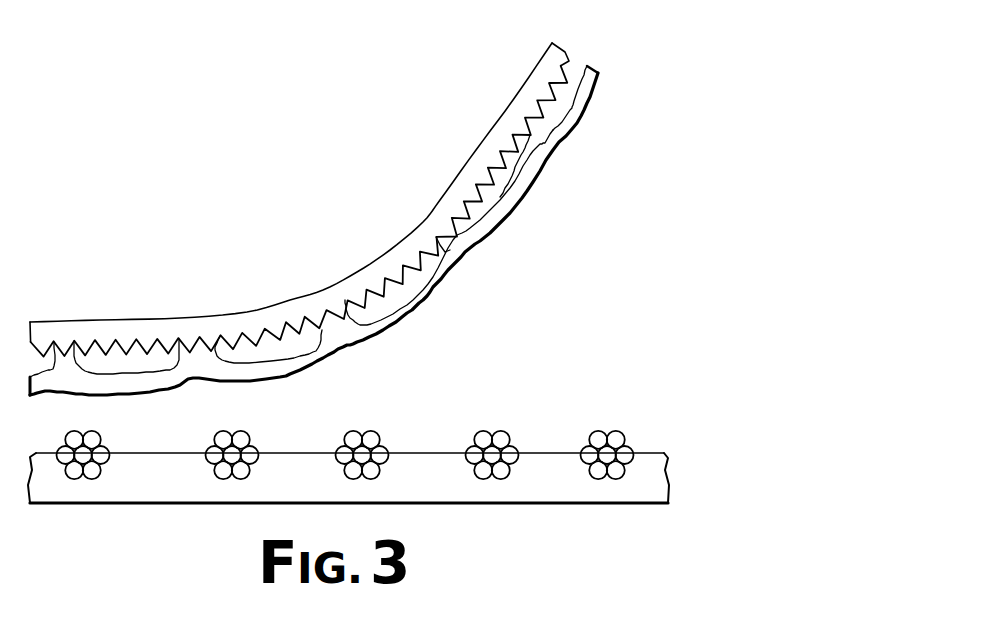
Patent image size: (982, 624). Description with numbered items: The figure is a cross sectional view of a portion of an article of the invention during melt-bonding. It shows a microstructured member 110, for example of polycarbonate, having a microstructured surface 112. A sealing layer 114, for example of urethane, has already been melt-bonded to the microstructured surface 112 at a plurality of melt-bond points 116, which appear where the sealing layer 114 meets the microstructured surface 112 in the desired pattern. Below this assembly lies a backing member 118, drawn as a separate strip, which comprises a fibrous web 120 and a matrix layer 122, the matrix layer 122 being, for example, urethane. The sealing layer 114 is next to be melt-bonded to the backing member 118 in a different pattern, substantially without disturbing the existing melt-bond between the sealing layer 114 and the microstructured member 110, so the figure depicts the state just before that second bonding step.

The microstructured member 110 is at (335, 198).
The microstructured surface 112 is at (570, 62).
The sealing layer 114 is at (575, 108).
The melt-bond points 116 is at (545, 143).
The backing member 118 is at (371, 474).
The fibrous web 120 is at (593, 440).
The matrix layer 122 is at (487, 493).